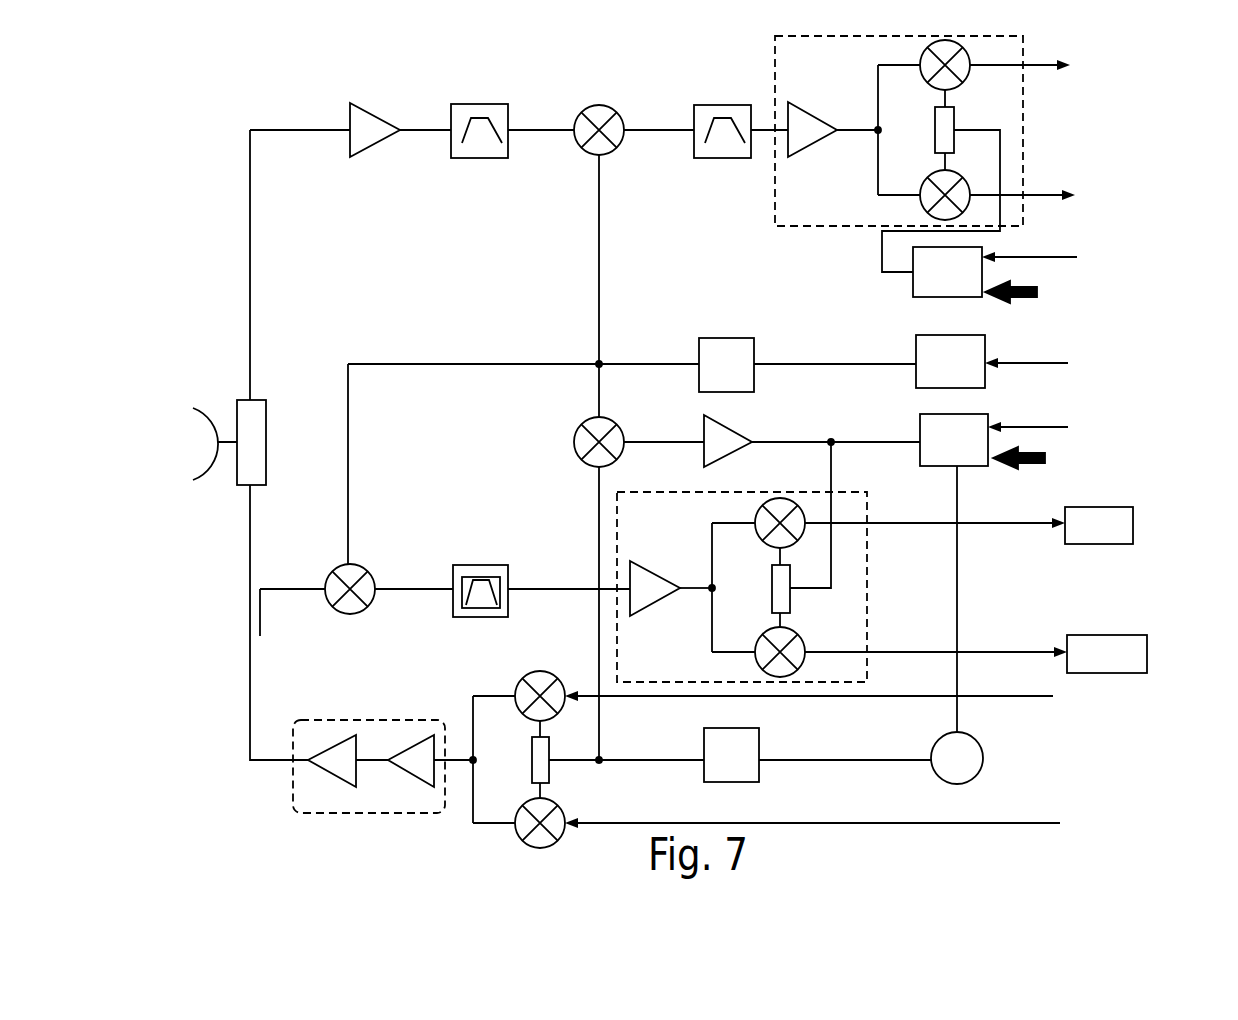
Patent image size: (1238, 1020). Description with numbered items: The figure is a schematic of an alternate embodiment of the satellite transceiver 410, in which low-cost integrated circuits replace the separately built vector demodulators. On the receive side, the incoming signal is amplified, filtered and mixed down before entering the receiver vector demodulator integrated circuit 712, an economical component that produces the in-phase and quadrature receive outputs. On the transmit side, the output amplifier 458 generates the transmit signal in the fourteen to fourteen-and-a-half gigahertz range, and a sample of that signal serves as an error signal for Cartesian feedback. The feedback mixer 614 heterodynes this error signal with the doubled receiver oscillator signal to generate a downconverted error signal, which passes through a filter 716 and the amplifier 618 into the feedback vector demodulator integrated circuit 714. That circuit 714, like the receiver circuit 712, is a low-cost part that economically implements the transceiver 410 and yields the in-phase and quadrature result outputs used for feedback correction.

The satellite transceiver 410 is at (914, 831).
The receiver vector demodulator integrated circuit 712 is at (1025, 52).
The feedback mixer 614 is at (327, 574).
The filter F3 716 is at (510, 602).
The amplifier 618 is at (648, 572).
The feedback vector demodulator integrated circuit 714 is at (868, 577).
The output amplifier 458 is at (292, 782).